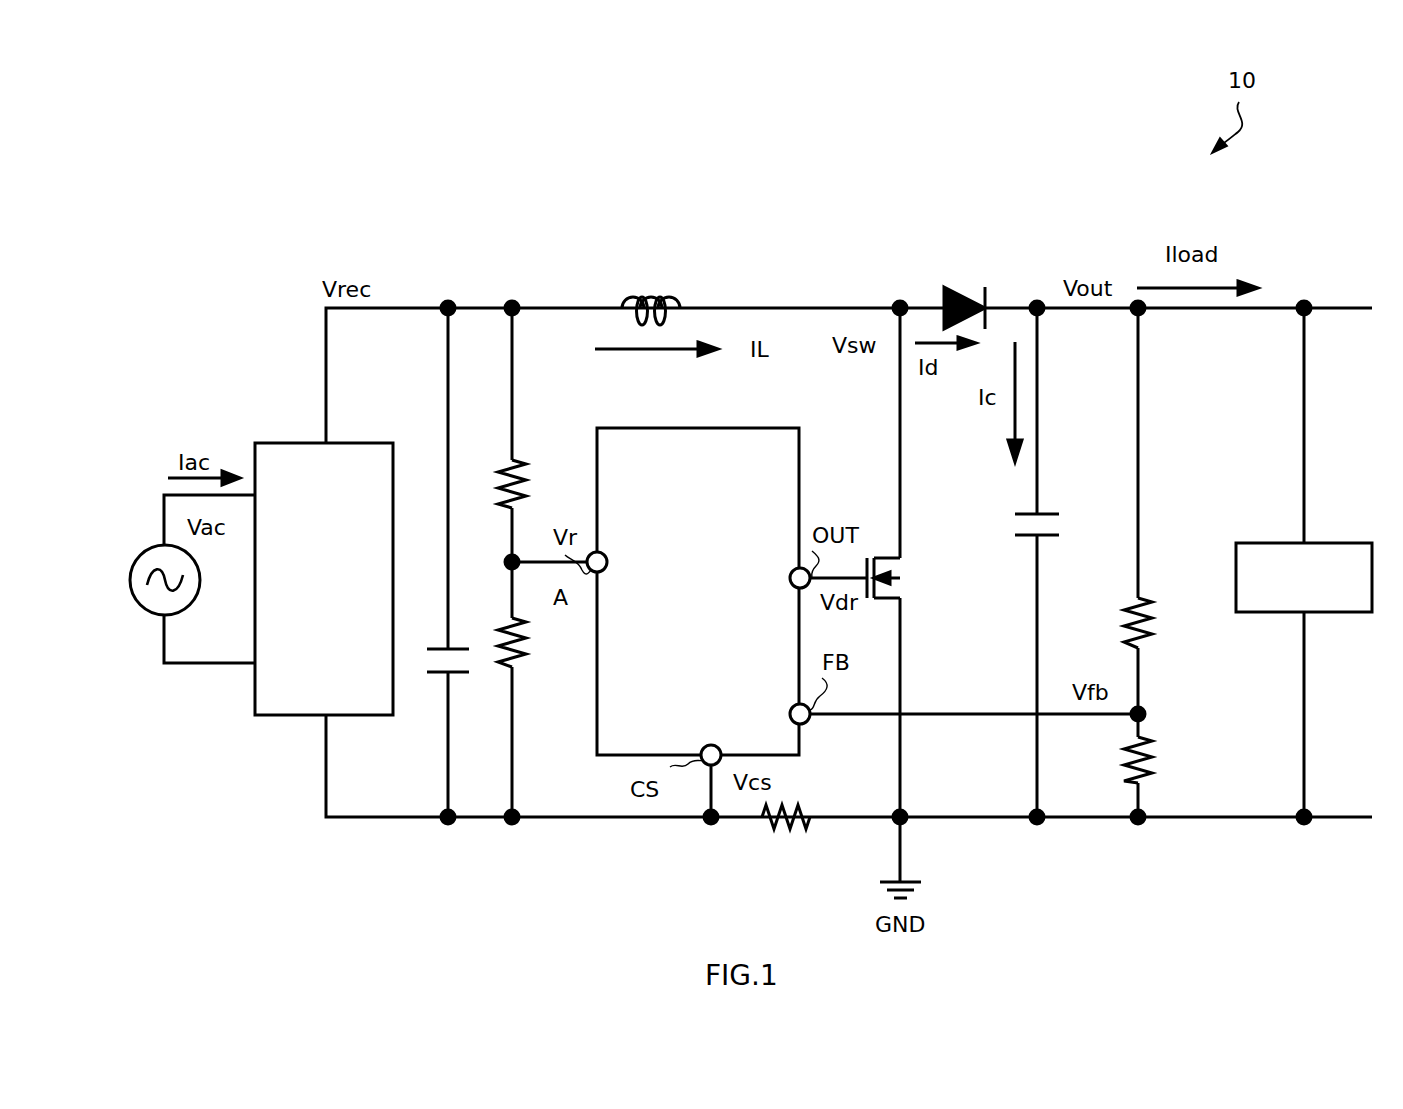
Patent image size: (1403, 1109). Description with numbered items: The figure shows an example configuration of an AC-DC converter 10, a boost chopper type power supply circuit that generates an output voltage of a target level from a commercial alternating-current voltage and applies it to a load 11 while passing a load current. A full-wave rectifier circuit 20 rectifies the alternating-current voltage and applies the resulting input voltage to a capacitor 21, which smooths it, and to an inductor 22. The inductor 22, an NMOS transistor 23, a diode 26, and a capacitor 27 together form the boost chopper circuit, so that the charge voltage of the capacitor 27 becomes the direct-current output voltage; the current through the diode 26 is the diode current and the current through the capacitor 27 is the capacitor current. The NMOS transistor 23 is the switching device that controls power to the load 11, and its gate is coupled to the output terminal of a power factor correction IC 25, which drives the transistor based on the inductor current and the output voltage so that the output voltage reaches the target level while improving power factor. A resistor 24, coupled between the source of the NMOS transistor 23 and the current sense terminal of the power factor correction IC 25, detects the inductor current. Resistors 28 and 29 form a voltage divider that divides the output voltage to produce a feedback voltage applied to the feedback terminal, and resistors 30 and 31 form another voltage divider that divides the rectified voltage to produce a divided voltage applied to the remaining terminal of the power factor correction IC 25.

The AC-DC converter 10 is at (165, 580).
The load 11 is at (1338, 542).
The full-wave rectifier circuit 20 is at (258, 441).
The capacitor 21 is at (440, 676).
The inductor 22 is at (678, 294).
The NMOS transistor 23 is at (903, 598).
The resistor 24 is at (768, 832).
The power factor correction IC 25 is at (614, 428).
The diode 26 is at (970, 296).
The capacitor 27 is at (1050, 514).
The resistor 28 is at (1150, 614).
The resistor 29 is at (1150, 750).
The resistor 30 is at (504, 497).
The resistor 31 is at (502, 655).